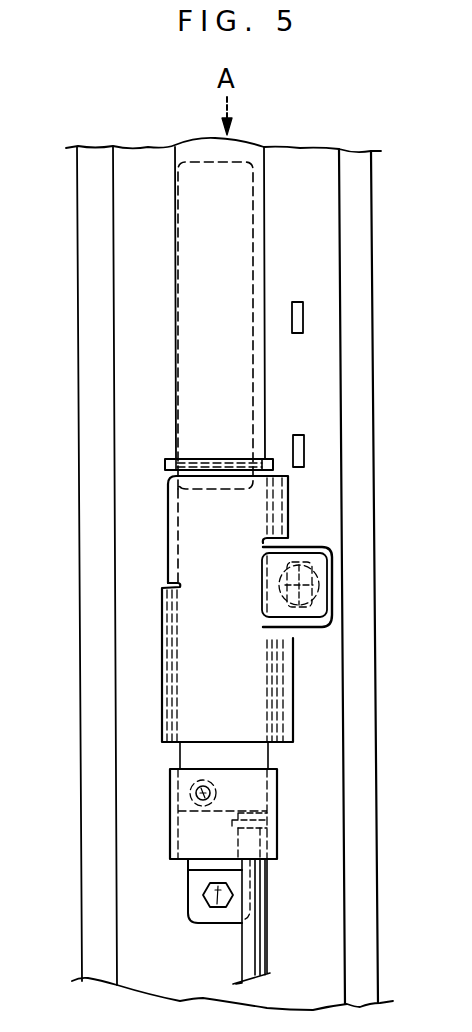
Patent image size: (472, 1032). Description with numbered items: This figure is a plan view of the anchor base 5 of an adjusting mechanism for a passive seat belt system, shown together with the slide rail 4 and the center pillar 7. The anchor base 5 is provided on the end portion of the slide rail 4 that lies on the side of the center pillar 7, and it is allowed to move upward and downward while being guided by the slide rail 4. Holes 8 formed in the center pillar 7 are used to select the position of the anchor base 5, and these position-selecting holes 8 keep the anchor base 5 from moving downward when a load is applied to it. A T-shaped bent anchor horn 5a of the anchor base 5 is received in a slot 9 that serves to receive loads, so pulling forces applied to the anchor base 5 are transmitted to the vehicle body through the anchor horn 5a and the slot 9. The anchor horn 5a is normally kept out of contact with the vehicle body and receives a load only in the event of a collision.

The center pillar 7 is at (93, 225).
The slide rail 4 is at (197, 226).
The slot 9 is at (203, 370).
The holes 8 is at (303, 325).
The anchor horn 5a is at (172, 458).
The anchor base 5 is at (288, 695).